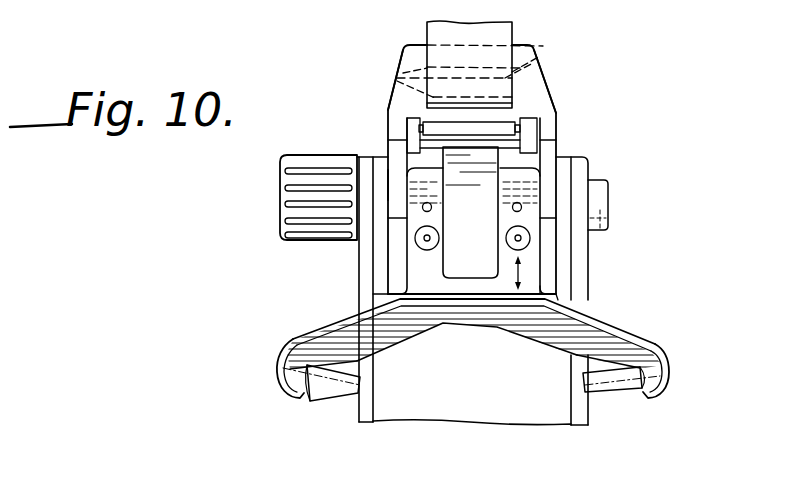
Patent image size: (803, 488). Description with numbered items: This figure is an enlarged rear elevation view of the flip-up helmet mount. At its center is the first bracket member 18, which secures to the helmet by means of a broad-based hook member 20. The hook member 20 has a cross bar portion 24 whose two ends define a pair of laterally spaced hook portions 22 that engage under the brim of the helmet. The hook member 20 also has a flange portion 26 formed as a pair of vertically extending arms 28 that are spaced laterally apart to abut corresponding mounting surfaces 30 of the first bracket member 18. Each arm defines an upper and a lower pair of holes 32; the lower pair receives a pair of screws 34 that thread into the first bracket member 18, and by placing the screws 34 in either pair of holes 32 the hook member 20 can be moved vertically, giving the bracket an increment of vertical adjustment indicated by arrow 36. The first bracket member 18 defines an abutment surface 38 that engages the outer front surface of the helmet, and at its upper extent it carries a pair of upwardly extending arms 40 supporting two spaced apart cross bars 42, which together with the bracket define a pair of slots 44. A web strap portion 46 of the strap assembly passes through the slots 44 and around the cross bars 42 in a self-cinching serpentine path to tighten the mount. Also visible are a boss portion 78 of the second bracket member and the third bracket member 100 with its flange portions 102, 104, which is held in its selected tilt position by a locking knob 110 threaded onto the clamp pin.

The first bracket member 18 is at (560, 107).
The hook member 20 is at (646, 331).
The hook portions 22 is at (317, 403).
The cross bar portion 24 is at (455, 318).
The flange portion 26 is at (557, 291).
The vertically extending arms 28 is at (500, 185).
The mounting surfaces 30 is at (527, 153).
The holes 32 is at (513, 207).
The screws 34 is at (507, 241).
The arrow 36 is at (540, 274).
The abutment surface 38 is at (390, 185).
The upwardly extending arms 40 is at (403, 52).
The cross bars 42 is at (545, 53).
The slots 44 is at (400, 81).
The web strap portion 46 is at (514, 31).
The boss portion 78 is at (570, 165).
The third bracket member 100 is at (350, 278).
The flange portion 102 is at (588, 252).
The flange portion 104 is at (357, 296).
The locking knob 110 is at (282, 218).